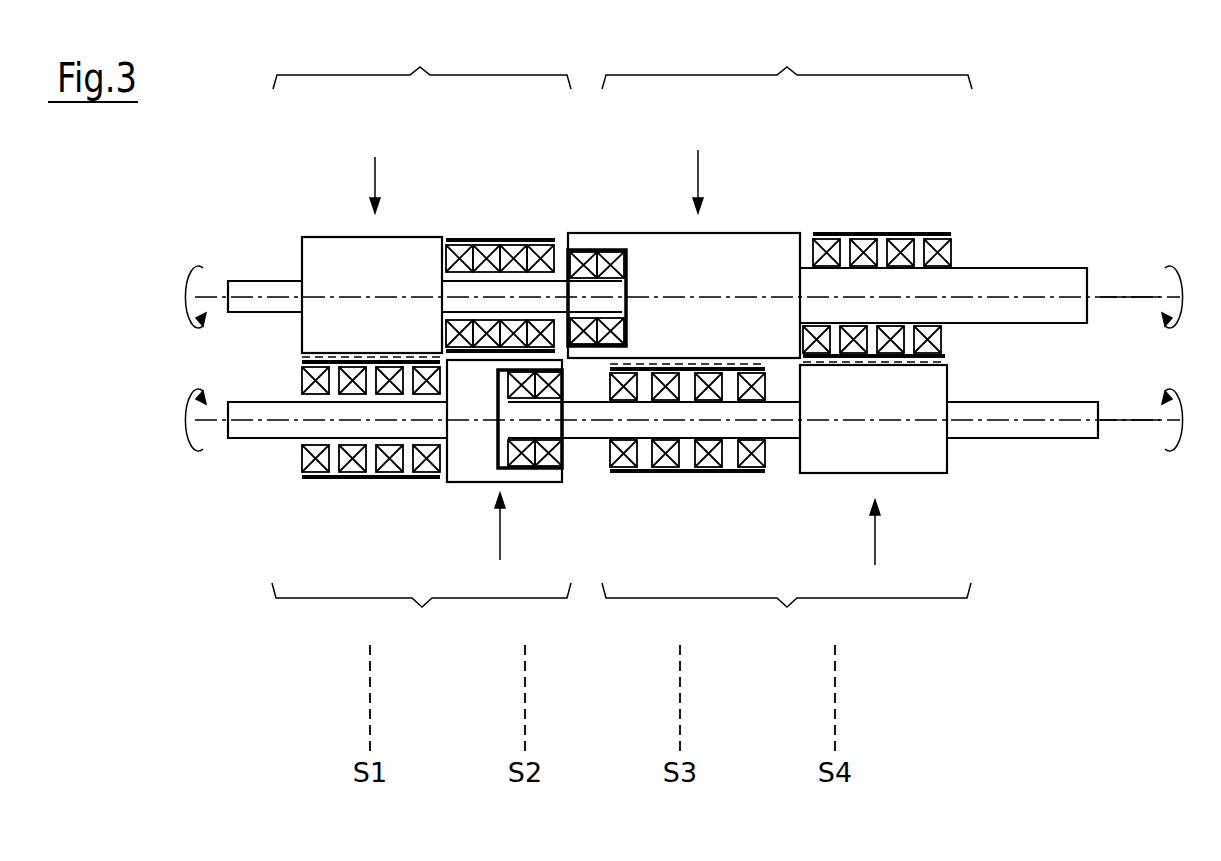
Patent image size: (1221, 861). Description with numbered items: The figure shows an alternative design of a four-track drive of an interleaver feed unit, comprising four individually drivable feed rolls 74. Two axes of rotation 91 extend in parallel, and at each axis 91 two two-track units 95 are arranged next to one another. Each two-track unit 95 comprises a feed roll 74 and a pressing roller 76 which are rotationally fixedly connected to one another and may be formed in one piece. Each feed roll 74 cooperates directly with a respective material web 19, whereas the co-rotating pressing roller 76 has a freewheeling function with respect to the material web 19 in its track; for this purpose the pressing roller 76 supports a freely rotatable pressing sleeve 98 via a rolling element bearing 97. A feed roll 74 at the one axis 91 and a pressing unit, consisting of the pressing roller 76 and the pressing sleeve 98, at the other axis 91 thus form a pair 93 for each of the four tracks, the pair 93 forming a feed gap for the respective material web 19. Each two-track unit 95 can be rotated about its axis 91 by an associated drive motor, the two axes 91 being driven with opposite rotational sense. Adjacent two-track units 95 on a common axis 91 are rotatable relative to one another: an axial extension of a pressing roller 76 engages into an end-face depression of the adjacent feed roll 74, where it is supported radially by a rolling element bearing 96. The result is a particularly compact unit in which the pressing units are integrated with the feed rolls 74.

The feed roll 74 is at (355, 283).
The pressing roller 76 is at (458, 288).
The material web 19 is at (624, 359).
The rolling element bearing 97 is at (518, 248).
The pressing sleeve 98 is at (484, 245).
The rolling element bearing 96 is at (606, 250).
The pair 93 is at (626, 358).
The two-track unit 95 is at (622, 336).
The axis of rotation 91 is at (1108, 292).